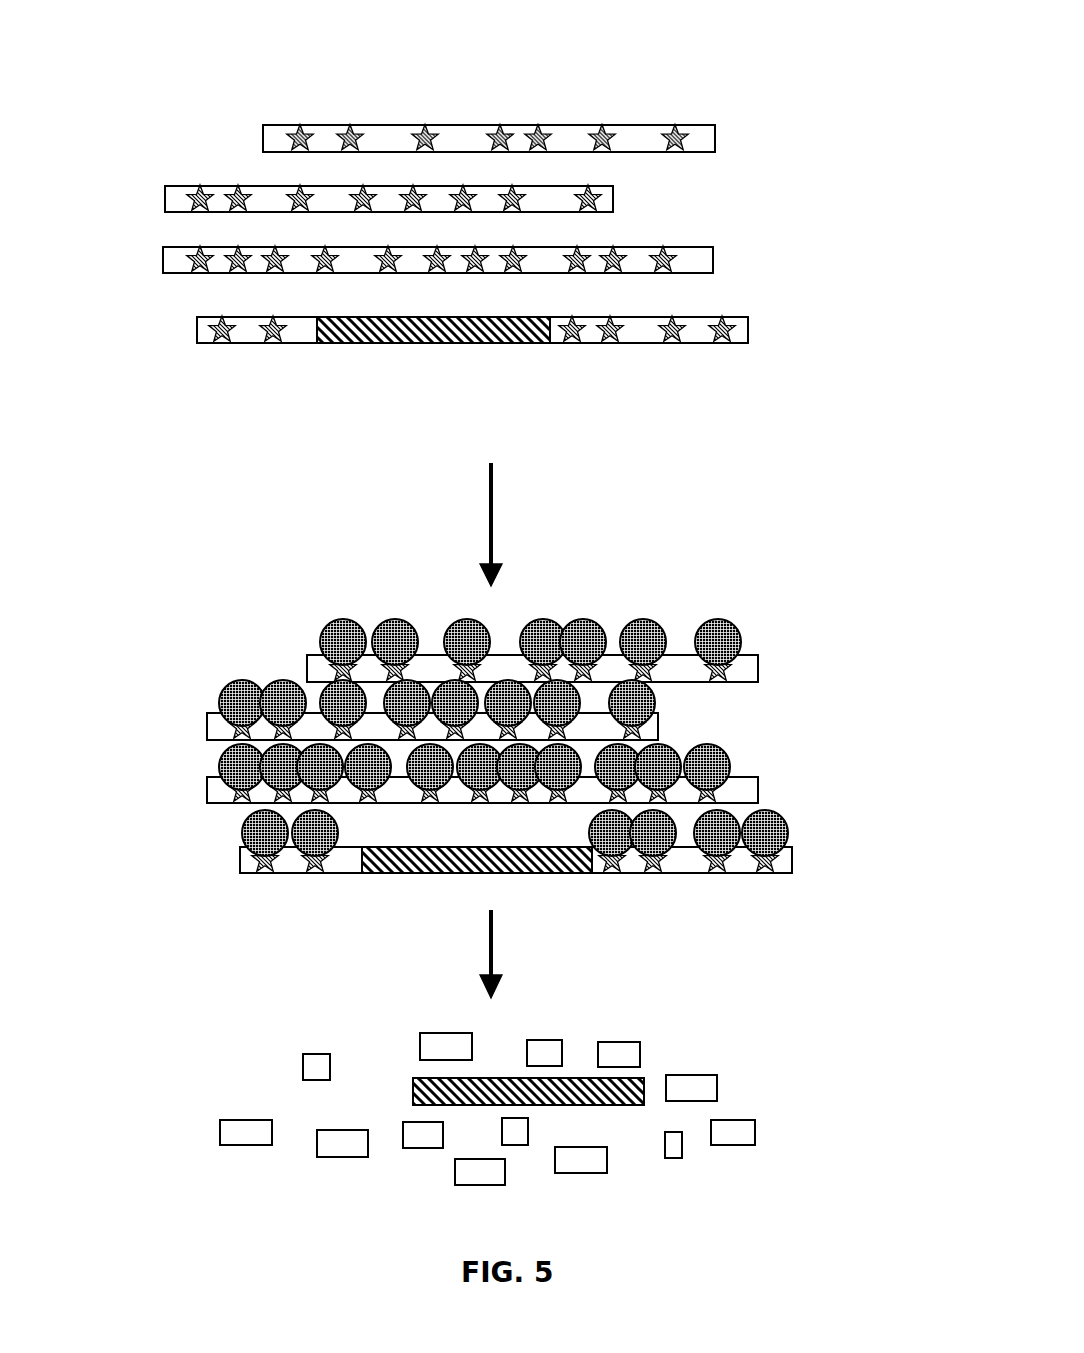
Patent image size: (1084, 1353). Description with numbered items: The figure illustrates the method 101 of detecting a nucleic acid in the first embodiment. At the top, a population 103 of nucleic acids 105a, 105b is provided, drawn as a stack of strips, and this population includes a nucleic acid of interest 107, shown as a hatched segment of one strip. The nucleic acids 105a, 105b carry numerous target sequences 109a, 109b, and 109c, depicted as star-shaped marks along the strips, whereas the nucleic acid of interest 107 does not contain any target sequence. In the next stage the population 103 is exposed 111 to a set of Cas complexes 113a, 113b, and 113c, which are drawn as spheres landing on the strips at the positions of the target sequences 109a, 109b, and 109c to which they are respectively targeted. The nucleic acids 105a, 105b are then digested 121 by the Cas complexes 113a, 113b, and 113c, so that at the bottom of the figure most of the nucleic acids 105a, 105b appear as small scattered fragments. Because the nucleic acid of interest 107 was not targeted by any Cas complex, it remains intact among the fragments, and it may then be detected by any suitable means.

The method 101 is at (503, 60).
The population 103 is at (776, 123).
The nucleic acid 105a is at (263, 138).
The nucleic acid 105b is at (613, 197).
The nucleic acid of interest 107 is at (425, 345).
The target sequence 109a is at (222, 345).
The target sequence 109b is at (607, 345).
The target sequence 109c is at (673, 345).
The exposing step 111 is at (522, 524).
The Cas complex 113a is at (243, 700).
The Cas complex 113b is at (338, 623).
The Cas complex 113c is at (655, 635).
The digesting step 121 is at (521, 954).